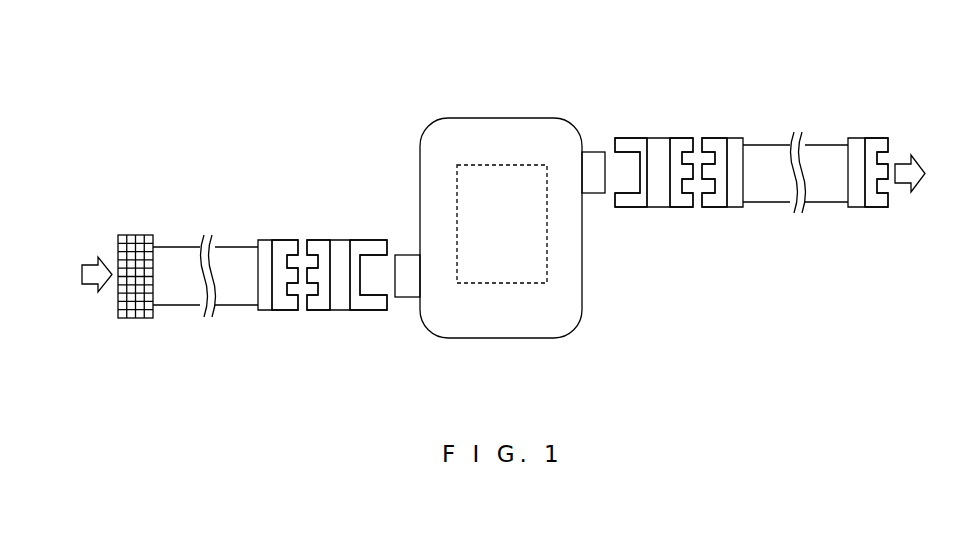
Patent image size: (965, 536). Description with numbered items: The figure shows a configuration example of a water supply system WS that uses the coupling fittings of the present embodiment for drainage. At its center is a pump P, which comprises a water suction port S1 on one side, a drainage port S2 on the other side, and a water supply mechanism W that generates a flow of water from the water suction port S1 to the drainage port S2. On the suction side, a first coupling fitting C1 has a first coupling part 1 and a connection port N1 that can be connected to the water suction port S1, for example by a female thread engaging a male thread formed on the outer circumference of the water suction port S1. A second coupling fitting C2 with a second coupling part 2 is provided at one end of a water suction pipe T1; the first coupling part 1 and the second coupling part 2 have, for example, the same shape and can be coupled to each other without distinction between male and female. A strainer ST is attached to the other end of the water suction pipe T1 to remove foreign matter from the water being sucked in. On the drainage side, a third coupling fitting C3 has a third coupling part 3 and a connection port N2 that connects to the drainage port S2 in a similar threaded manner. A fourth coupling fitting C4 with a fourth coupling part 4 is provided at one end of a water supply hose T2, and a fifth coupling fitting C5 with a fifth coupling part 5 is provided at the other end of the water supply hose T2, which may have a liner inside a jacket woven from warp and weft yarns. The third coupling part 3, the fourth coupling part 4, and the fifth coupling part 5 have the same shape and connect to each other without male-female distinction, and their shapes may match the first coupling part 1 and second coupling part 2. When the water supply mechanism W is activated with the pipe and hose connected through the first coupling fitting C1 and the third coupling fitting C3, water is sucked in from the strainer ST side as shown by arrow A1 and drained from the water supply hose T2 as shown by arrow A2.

The water supply system WS is at (311, 104).
The arrow A1 is at (82, 274).
The strainer ST is at (137, 319).
The water suction pipe T1 is at (185, 246).
The second coupling fitting C2 is at (265, 311).
The second coupling part 2 is at (283, 311).
The first coupling part 1 is at (320, 311).
The first coupling fitting C1 is at (343, 226).
The connection port N1 is at (370, 311).
The water suction port S1 is at (407, 254).
The pump P is at (470, 117).
The water supply mechanism W is at (512, 164).
The drainage port S2 is at (592, 151).
The connection port N2 is at (632, 208).
The third coupling part 3 is at (680, 208).
The third coupling fitting C3 is at (663, 124).
The fourth coupling part 4 is at (717, 208).
The fourth coupling fitting C4 is at (735, 208).
The water supply hose T2 is at (812, 144).
The fifth coupling fitting C5 is at (857, 208).
The fifth coupling part 5 is at (875, 208).
The arrow A2 is at (927, 173).